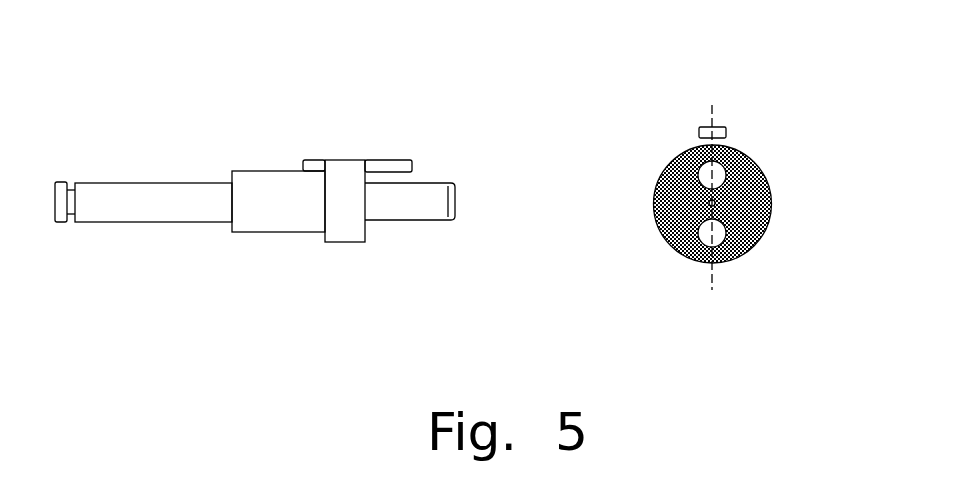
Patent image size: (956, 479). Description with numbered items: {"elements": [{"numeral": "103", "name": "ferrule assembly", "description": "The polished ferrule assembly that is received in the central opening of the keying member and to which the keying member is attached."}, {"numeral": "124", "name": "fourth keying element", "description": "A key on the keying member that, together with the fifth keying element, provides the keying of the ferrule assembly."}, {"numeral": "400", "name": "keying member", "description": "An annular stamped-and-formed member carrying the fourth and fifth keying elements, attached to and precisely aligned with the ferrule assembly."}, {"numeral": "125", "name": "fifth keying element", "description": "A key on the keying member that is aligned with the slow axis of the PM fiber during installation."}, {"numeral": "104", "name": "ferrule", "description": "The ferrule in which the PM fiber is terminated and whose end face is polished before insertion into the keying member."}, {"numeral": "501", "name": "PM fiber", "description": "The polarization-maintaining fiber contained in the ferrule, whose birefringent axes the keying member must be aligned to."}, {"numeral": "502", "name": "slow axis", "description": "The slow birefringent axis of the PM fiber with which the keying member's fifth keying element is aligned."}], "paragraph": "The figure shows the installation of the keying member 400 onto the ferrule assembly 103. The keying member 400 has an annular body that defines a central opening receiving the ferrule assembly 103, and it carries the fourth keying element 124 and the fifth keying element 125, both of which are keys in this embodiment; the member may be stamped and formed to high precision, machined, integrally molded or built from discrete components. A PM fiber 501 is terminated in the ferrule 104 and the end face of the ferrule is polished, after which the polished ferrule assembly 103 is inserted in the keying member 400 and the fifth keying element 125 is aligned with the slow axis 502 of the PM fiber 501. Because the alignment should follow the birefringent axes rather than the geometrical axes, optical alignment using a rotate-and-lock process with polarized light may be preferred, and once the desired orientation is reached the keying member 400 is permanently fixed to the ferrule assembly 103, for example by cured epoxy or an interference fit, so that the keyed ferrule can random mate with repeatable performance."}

The handle rod 103 is at (132, 200).
The first protrusion 124 is at (315, 160).
The rotating block 400 is at (345, 170).
The second protrusion 125 is at (390, 165).
The output shaft 104 is at (403, 207).
The disc body 501 is at (765, 177).
The center axis line 502 is at (715, 270).